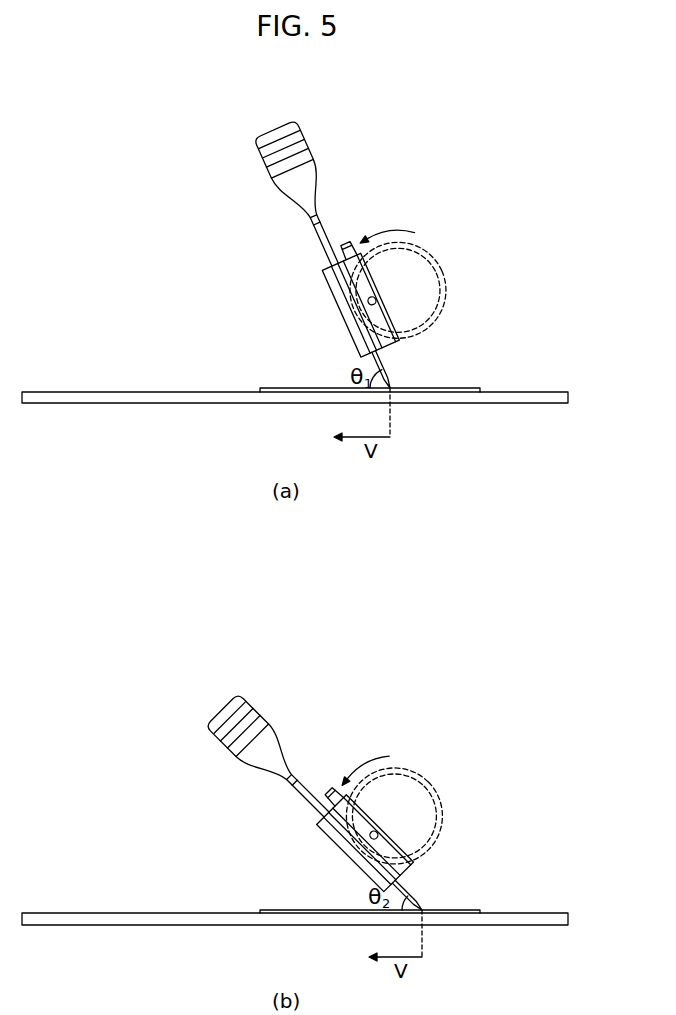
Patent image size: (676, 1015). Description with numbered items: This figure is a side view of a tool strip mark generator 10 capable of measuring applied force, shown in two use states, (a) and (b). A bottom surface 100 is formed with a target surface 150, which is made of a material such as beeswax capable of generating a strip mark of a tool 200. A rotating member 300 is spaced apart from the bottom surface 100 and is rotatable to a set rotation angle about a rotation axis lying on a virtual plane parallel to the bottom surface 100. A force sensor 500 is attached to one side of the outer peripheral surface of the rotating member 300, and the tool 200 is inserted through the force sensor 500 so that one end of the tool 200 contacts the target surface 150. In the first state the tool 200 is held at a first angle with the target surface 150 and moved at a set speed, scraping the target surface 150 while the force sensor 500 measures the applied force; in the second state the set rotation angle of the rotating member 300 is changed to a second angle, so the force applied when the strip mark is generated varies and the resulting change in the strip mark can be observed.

The surface treatment apparatus 10 is at (428, 99).
The bottom surface 100 is at (162, 392).
The target surface 150 is at (274, 388).
The tool 200 is at (258, 158).
The rotating member 300 is at (441, 263).
The force sensor 500 is at (326, 279).